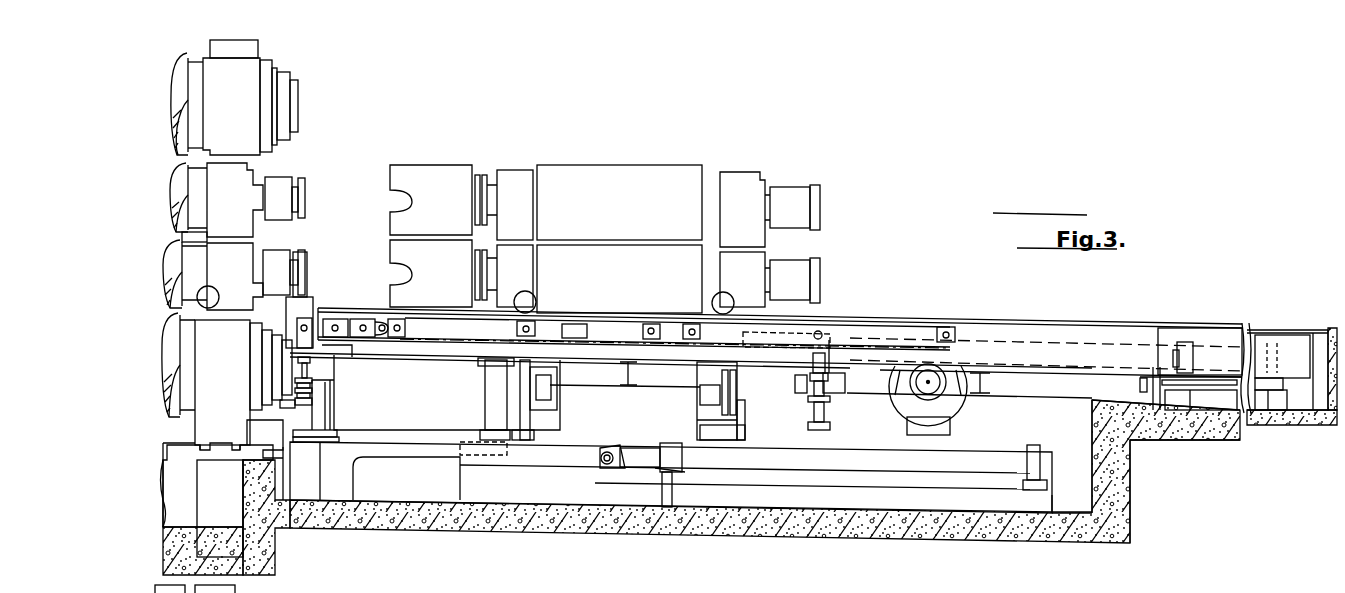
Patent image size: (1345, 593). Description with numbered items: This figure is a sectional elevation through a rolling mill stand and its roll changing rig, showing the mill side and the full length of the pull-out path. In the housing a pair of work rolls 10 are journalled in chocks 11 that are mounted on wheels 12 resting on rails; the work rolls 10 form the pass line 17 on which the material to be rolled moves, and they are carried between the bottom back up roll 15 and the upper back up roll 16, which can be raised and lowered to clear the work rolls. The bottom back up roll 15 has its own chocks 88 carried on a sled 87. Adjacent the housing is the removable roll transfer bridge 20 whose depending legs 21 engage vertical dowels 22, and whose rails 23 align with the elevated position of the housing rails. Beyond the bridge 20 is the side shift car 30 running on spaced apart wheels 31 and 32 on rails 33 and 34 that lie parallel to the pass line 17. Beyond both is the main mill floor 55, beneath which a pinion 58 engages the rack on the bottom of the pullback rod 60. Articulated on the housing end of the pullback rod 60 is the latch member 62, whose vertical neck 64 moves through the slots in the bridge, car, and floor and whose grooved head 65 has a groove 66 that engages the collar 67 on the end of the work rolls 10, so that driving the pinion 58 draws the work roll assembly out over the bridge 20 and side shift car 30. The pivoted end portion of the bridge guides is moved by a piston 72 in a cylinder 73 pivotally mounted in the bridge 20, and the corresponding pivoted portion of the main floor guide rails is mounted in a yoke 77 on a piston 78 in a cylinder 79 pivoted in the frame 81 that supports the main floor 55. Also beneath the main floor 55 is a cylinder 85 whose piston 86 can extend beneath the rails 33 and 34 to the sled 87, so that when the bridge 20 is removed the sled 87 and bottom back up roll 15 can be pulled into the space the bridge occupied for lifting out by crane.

The work rolls 10 is at (180, 168).
The chocks 11 is at (237, 177).
The wheels 12 is at (197, 298).
The bottom back up roll 15 is at (172, 355).
The upper back up roll 16 is at (188, 95).
The pass line 17 is at (180, 233).
The roll transfer bridge 20 is at (766, 391).
The depending legs 21 is at (347, 408).
The vertical dowels 22 is at (318, 408).
The rails 23 is at (375, 311).
The side shift car 30 is at (677, 353).
The wheels 31 is at (717, 410).
The wheels 32 is at (520, 397).
The rails 33 is at (737, 420).
The rails 34 is at (540, 410).
The main mill floor 55 is at (1205, 326).
The pinion 58 is at (960, 408).
The pullback rod 60 is at (598, 330).
The latch member 62 is at (340, 320).
The vertical neck 64 is at (338, 316).
The grooved head 65 is at (312, 312).
The groove 66 is at (307, 300).
The collar 67 is at (303, 260).
The piston 72 is at (306, 370).
The cylinder 73 is at (292, 402).
The yoke 77 is at (822, 356).
The piston 78 is at (800, 396).
The cylinder 79 is at (783, 398).
The frame 81 is at (833, 405).
The cylinder 85 is at (975, 478).
The piston 86 is at (664, 470).
The sled 87 is at (213, 462).
The chocks 88 is at (230, 416).